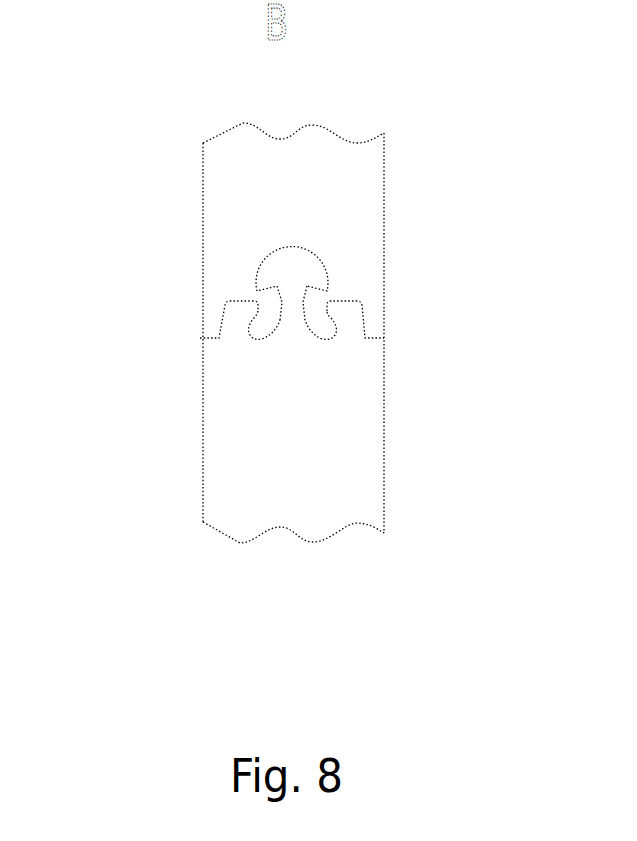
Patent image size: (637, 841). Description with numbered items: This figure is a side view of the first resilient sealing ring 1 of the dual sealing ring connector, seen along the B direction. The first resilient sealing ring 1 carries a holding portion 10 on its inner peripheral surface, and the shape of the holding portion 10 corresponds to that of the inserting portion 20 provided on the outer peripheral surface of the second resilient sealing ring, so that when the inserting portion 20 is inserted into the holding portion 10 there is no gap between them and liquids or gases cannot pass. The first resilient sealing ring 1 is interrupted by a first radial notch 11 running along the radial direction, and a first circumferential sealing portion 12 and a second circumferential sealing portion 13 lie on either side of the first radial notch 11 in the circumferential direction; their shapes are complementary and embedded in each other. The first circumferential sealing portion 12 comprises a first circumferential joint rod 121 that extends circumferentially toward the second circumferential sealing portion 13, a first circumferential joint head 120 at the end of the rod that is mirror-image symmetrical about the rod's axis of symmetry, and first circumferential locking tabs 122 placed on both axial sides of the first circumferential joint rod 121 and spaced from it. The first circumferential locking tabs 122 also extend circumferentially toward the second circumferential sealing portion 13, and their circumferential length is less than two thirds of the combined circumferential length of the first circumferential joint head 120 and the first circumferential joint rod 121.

The first resilient sealing ring 1 is at (375, 185).
The holding portion 10 is at (288, 316).
The first radial notch 11 is at (205, 338).
The first circumferential sealing portion 12 is at (215, 497).
The second circumferential sealing portion 13 is at (227, 178).
The inserting portion 20 is at (248, 352).
The first circumferential joint head 120 is at (300, 265).
The first circumferential joint rod 121 is at (298, 312).
The first circumferential locking tabs 122 is at (352, 317).